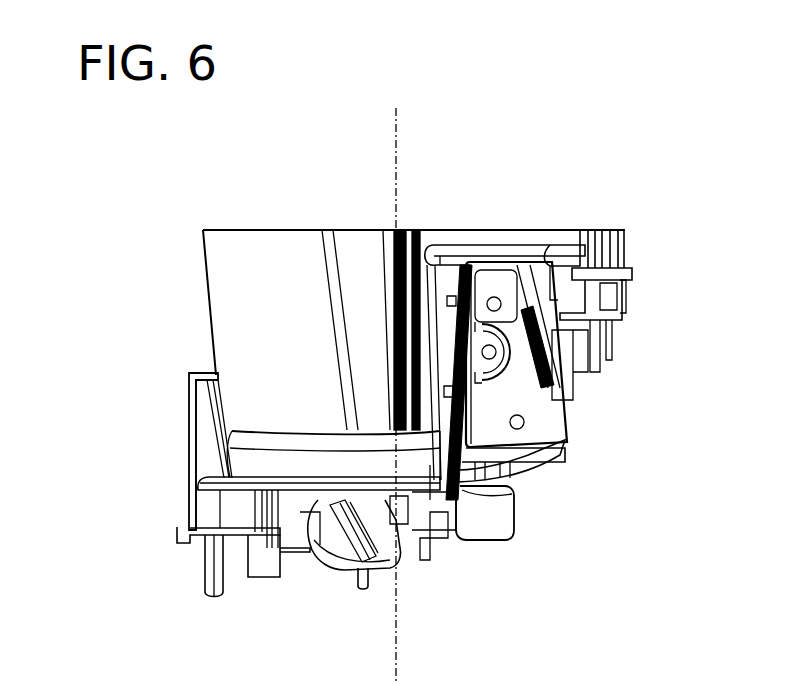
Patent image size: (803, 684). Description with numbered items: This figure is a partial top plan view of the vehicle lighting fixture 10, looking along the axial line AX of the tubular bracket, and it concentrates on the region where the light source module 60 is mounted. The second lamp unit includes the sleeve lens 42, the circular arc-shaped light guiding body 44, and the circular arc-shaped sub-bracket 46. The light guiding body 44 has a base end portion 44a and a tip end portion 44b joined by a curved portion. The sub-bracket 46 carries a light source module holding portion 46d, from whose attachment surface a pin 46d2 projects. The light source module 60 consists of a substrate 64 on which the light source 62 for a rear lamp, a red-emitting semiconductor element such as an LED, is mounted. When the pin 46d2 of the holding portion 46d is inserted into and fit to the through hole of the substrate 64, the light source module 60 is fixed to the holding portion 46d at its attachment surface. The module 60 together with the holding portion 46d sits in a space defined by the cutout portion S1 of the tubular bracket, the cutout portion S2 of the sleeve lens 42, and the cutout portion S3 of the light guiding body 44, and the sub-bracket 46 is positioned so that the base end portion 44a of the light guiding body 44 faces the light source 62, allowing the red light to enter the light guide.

The vehicle lighting fixture 10 is at (514, 108).
The axial line AX is at (400, 132).
The sleeve lens 42 is at (232, 299).
The light guiding body 44 is at (228, 459).
The base end portion 44a is at (436, 462).
The tip end portion 44b is at (612, 288).
The sub-bracket 46 is at (300, 560).
The light source module holding portion 46d is at (522, 388).
The pin 46d2 is at (448, 298).
The light source module 60 is at (452, 344).
The light source for a rear lamp 62 is at (505, 497).
The substrate 64 is at (470, 262).
The cutout portion of the tubular bracket S1 is at (556, 270).
The cutout portion of the sleeve lens S2 is at (595, 249).
The cutout portion of the light guide body S3 is at (617, 249).